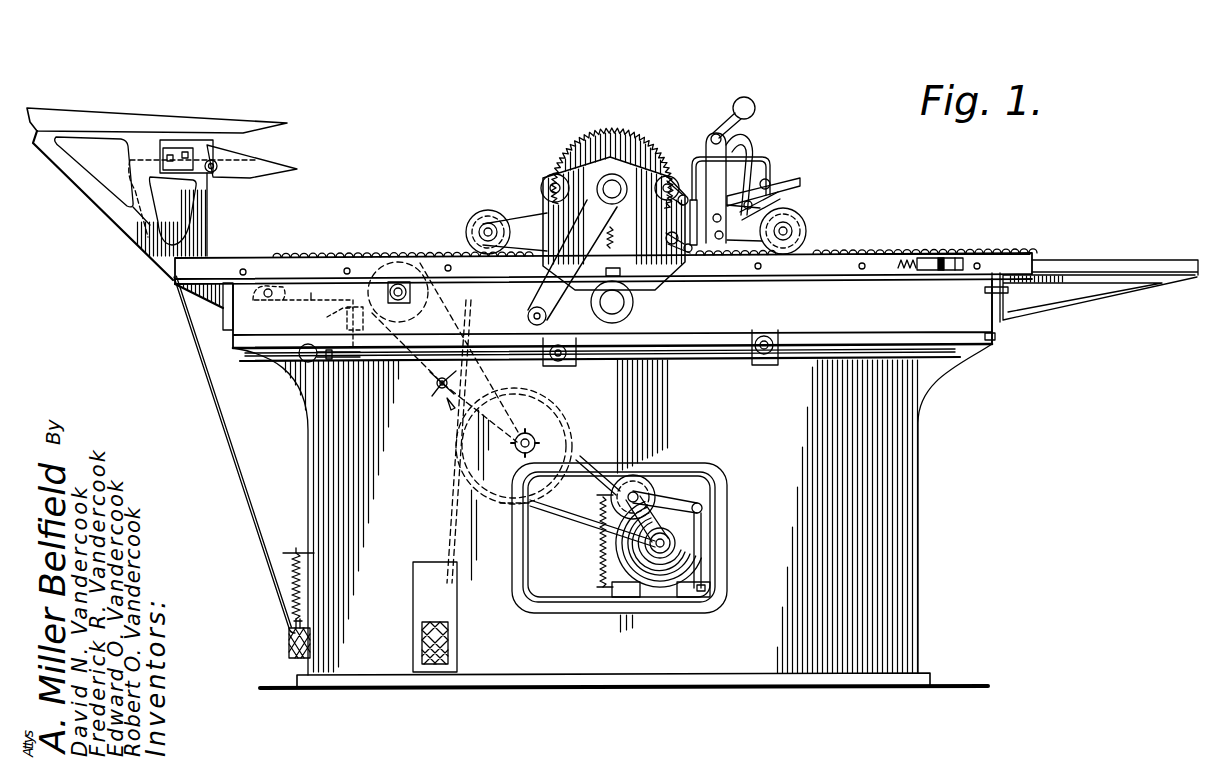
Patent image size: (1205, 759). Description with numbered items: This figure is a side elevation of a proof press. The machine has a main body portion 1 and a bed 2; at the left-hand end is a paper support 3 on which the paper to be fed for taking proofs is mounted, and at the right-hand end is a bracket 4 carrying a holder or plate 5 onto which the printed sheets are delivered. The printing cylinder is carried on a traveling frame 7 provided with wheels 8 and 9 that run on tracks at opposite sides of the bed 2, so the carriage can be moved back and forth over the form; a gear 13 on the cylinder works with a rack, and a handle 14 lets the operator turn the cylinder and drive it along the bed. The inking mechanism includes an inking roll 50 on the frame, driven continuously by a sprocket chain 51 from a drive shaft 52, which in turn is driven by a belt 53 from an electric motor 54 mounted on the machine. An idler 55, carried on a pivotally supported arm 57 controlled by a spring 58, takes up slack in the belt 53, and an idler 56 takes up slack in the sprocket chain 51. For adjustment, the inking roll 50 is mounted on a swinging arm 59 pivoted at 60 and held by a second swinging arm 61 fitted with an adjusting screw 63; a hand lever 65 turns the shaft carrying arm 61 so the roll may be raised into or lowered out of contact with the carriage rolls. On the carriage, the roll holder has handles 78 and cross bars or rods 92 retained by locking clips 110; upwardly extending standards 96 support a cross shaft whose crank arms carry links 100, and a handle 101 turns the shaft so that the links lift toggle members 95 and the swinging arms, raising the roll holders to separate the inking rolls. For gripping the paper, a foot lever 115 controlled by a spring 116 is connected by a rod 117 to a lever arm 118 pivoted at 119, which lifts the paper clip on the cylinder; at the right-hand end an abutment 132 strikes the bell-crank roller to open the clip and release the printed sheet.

The main body portion 1 is at (931, 474).
The bed 2 is at (936, 243).
The paper support 3 is at (219, 130).
The bracket 4 is at (1083, 310).
The holder or plate 5 is at (1128, 258).
The traveling frame 7 is at (525, 207).
The wheels 8 is at (482, 214).
The wheels 9 is at (803, 219).
The gear 13 is at (647, 131).
The handle 14 is at (547, 297).
The inking roll 50 is at (408, 257).
The sprocket chain 51 is at (432, 384).
The drive shaft 52 is at (537, 439).
The belt 53 is at (573, 527).
The electric motor 54 is at (680, 553).
The idler 55 is at (647, 493).
The idler 56 is at (451, 404).
The pivotally supported arm 57 is at (688, 503).
The spring 58 is at (600, 572).
The swinging arm 59 is at (311, 293).
The pivot 60 is at (262, 302).
The second swinging arm 61 is at (347, 328).
The adjusting screw 63 is at (342, 308).
The hand lever 65 is at (304, 345).
The handles 78 is at (772, 168).
The transverse bars or rods 92 is at (774, 200).
The toggle lifting members 95 is at (747, 167).
The standards 96 is at (721, 152).
The links 100 is at (750, 137).
The handle 101 is at (728, 126).
The locking clips 110 is at (778, 186).
The foot lever 115 is at (287, 643).
The spring 116 is at (293, 587).
The rod 117 is at (241, 480).
The lever arm 118 is at (272, 172).
The pivot 119 is at (217, 171).
The abutment 132 is at (830, 243).